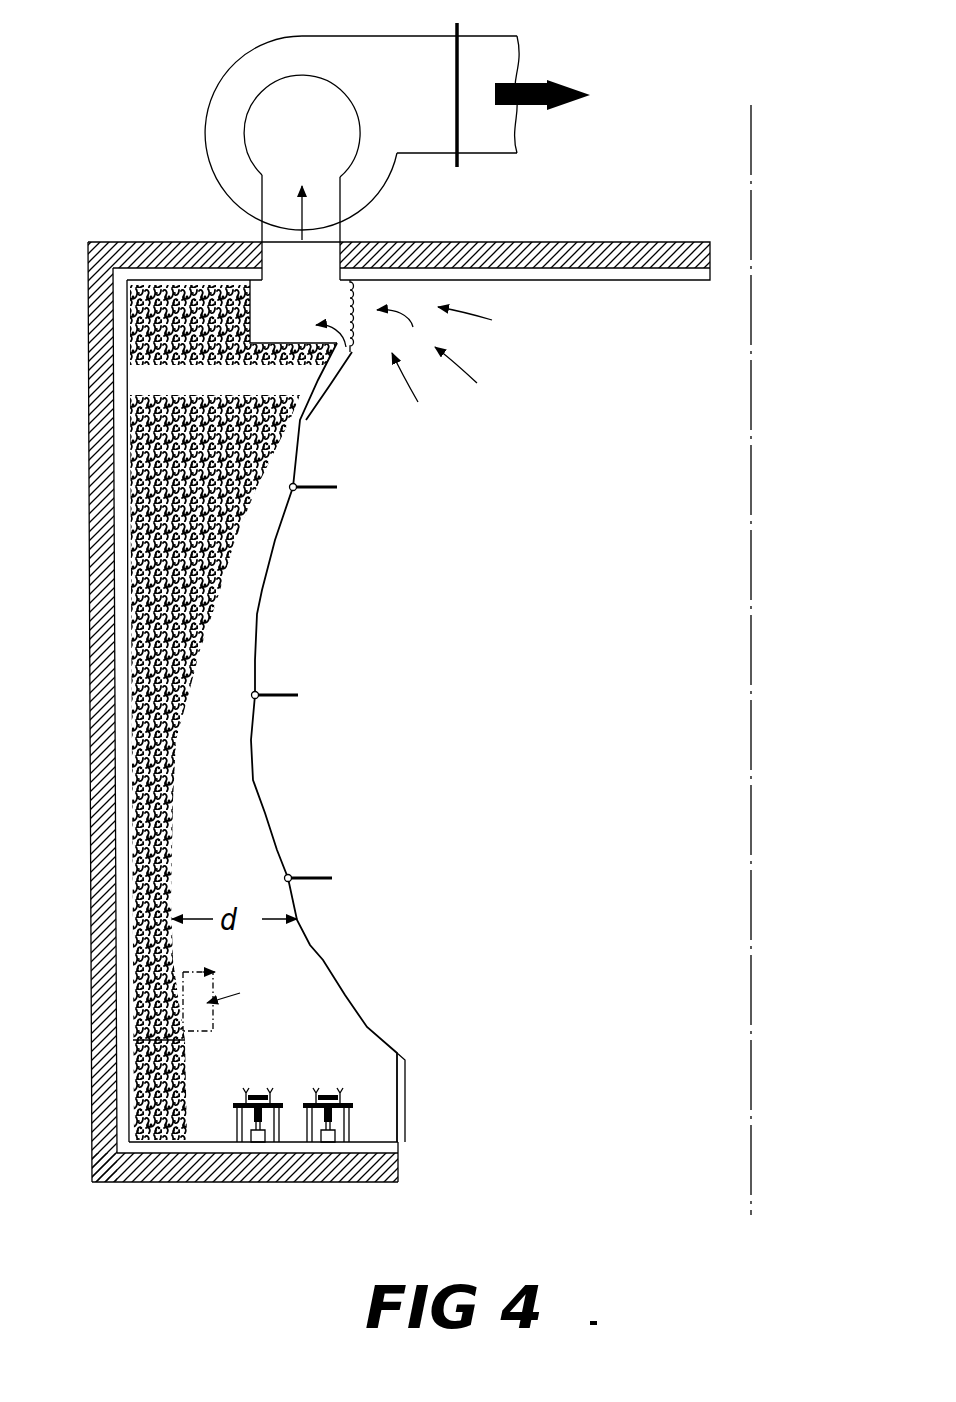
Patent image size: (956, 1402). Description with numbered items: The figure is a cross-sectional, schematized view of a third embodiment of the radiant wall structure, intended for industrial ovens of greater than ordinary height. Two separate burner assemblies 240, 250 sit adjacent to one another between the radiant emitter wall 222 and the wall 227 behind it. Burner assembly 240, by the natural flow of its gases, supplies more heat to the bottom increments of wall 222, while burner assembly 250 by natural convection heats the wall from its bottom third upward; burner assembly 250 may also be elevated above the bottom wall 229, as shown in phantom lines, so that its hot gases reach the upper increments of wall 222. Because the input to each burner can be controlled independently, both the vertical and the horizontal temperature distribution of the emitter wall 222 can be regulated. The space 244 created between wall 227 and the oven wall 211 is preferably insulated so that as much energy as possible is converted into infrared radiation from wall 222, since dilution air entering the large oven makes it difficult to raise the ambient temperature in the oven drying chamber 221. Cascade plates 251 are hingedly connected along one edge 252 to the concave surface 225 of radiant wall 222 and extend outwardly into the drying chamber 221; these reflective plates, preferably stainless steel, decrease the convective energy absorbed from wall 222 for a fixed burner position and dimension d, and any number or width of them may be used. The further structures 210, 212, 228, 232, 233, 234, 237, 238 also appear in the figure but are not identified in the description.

The drying enclosure 210 is at (88, 232).
The oven wall 211 is at (103, 862).
The ceiling 212 is at (197, 241).
The drying chamber 221 is at (690, 645).
The radiant wall 222 is at (265, 813).
The concave surface 225 is at (258, 615).
The wall 227 is at (170, 855).
The curtain lower end 228 is at (308, 995).
The bottom wall 229 is at (213, 1148).
The blower 232 is at (354, 126).
The filter box 233 is at (248, 306).
The inlet air flow 234 is at (358, 305).
The duct 237 is at (318, 258).
The blower housing 238 is at (210, 156).
The burner assembly 240 is at (353, 1107).
The space 244 is at (142, 415).
The burner assembly 250 is at (230, 997).
The cascade plates 251 is at (323, 489).
The edge 252 is at (296, 485).